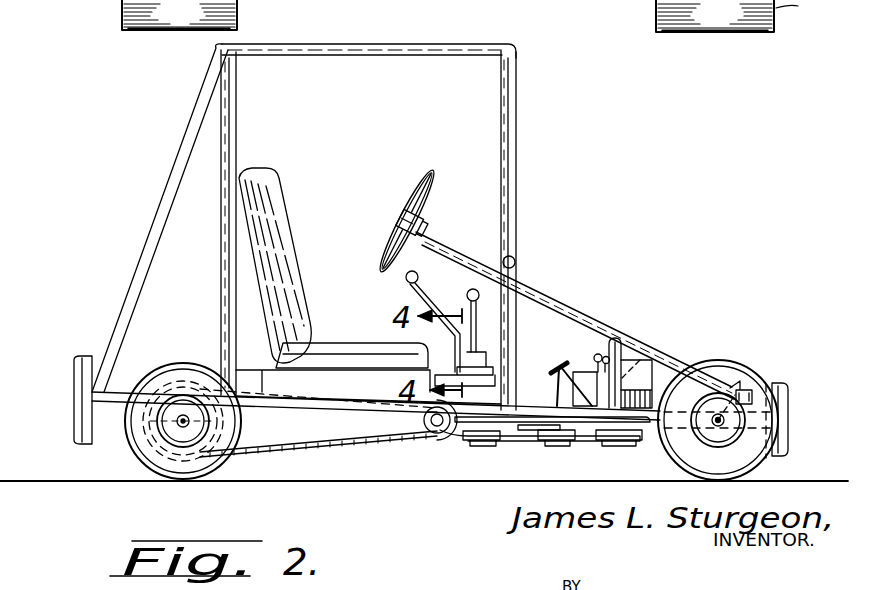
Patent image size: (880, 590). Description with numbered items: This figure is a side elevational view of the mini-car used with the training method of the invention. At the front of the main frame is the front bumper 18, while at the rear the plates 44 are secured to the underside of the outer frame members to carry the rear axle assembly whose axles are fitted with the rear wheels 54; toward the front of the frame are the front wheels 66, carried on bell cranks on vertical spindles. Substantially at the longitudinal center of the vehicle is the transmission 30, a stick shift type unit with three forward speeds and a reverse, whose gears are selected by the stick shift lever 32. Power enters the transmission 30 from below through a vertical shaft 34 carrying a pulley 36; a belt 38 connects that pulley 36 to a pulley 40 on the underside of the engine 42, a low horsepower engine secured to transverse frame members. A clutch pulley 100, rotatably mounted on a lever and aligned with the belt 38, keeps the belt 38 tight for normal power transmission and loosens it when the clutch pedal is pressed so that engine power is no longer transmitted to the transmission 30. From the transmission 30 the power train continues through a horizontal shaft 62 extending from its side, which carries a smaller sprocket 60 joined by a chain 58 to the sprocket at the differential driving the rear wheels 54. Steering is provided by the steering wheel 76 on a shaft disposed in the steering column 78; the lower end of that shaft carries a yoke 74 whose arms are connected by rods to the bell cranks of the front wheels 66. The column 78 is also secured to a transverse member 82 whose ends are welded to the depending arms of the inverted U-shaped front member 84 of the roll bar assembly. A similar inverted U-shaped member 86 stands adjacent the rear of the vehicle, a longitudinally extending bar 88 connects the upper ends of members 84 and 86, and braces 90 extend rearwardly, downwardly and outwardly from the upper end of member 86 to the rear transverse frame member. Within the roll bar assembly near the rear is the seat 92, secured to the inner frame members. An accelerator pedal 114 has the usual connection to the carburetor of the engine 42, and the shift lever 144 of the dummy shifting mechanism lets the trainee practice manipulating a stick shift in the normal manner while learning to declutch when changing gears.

The front bumper 18 is at (785, 392).
The transmission 30 is at (490, 357).
The stick shift lever 32 is at (465, 303).
The vertical shaft 34 is at (487, 447).
The pulley 36 is at (470, 440).
The belt 38 is at (526, 436).
The pulley 40 is at (620, 445).
The engine 42 is at (640, 386).
The plates 44 is at (258, 402).
The rear wheels 54 is at (175, 368).
The chain 58 is at (280, 445).
The sprocket 60 is at (428, 424).
The horizontal shaft 62 is at (430, 432).
The front wheels 66 is at (722, 384).
The yoke 74 is at (755, 392).
The steering wheel 76 is at (600, 350).
The steering column 78 is at (616, 350).
The transverse member 82 is at (515, 258).
The front member of roll bar assembly 84 is at (518, 80).
The rear member of roll bar assembly 86 is at (240, 121).
The longitudinally extending bar 88 is at (350, 46).
The braces 90 is at (165, 190).
The seat 92 is at (292, 240).
The pulley 100 is at (565, 444).
The accelerator pedal 114 is at (564, 358).
The shift lever 144 is at (405, 280).